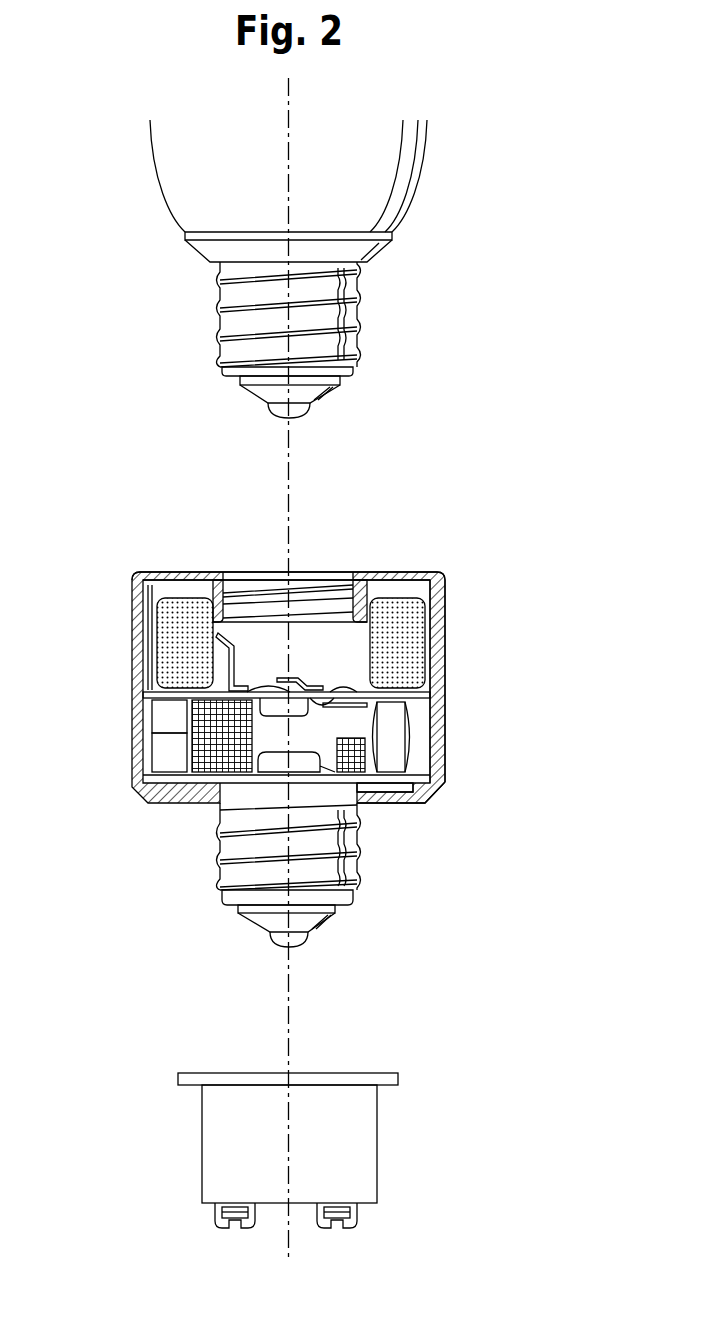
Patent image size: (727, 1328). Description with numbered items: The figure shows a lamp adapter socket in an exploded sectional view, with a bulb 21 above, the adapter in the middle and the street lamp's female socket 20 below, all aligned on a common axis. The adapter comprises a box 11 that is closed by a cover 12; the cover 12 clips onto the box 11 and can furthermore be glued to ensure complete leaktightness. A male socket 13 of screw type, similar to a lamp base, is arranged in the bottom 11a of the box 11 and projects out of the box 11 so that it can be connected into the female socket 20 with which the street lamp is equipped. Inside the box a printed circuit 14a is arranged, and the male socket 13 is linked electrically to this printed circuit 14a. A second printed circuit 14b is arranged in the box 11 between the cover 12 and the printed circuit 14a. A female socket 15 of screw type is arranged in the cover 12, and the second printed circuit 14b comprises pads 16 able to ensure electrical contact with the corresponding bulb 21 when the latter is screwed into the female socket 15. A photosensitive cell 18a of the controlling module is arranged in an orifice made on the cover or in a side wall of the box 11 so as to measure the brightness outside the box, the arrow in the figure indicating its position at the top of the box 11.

The bulb 21 is at (375, 257).
The box 11 is at (132, 725).
The cover 12 is at (420, 572).
The photosensitive cell 18a is at (157, 565).
The female socket 15 is at (222, 582).
The pads 16 is at (282, 680).
The second printed circuit 14b is at (445, 700).
The printed circuit 14a is at (445, 750).
The bottom 11a is at (418, 803).
The male socket 13 is at (240, 852).
The female socket 20 is at (233, 1157).